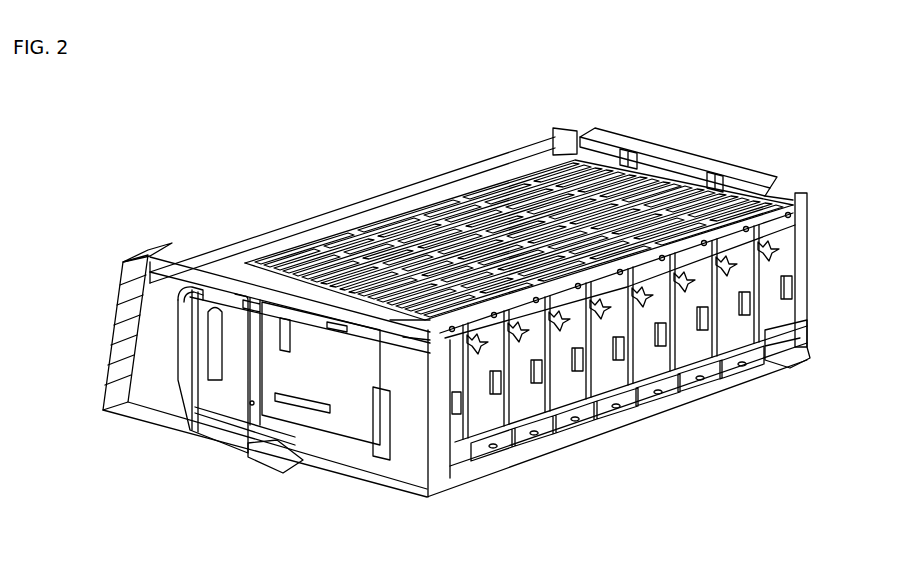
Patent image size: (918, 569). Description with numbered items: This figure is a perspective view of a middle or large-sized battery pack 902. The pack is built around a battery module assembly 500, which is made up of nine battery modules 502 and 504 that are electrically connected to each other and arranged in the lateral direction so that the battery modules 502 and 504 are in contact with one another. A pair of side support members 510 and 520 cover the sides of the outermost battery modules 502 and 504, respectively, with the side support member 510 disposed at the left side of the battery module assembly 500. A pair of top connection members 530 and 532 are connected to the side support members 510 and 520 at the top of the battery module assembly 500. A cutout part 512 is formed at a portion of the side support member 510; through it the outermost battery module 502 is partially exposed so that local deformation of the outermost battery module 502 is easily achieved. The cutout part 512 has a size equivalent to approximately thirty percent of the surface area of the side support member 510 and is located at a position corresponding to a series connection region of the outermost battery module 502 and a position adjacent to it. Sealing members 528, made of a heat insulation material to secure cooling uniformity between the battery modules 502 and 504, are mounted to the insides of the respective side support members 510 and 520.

The middle or large-sized battery pack 902 is at (438, 289).
The side support member 510 is at (155, 254).
The top connection member 530 is at (367, 201).
The battery module assembly 500 is at (485, 190).
The side support member 520 is at (731, 156).
The sealing member 528 is at (663, 158).
The top connection member 532 is at (796, 192).
The battery module 502 is at (463, 468).
The battery module 504 is at (803, 362).
The cutout part 512 is at (222, 400).